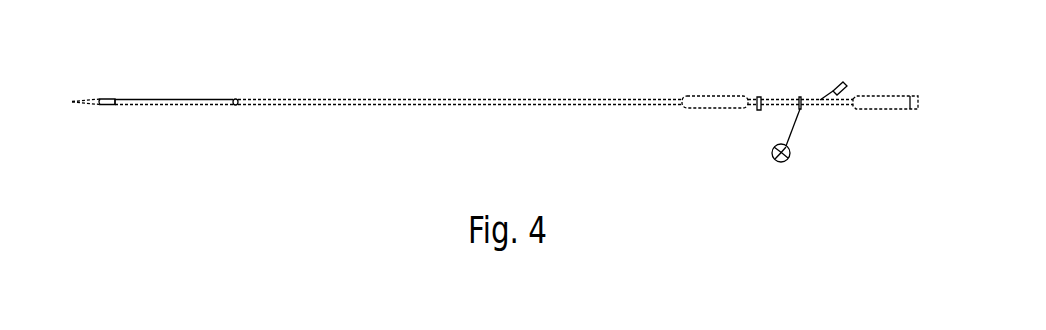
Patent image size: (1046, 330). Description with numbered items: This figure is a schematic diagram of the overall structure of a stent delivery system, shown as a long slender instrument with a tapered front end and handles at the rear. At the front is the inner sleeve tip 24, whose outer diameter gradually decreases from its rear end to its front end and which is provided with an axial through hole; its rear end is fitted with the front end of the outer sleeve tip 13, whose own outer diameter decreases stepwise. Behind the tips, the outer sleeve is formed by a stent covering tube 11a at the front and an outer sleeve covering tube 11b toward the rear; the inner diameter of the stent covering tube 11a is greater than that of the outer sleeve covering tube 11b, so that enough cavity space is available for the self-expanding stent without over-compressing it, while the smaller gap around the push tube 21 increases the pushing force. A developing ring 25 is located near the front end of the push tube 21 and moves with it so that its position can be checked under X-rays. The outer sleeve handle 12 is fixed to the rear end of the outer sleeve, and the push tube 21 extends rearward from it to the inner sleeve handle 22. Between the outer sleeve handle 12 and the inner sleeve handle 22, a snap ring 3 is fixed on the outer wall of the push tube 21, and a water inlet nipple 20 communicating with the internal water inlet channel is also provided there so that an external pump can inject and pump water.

The inner sleeve tip 24 is at (102, 98).
The outer sleeve tip 13 is at (115, 105).
The stent covering tube 11a is at (177, 98).
The developing ring 25 is at (236, 99).
The outer sleeve covering tube 11b is at (418, 98).
The outer sleeve handle 12 is at (712, 95).
The snap ring 3 is at (760, 97).
The push tube 21 is at (790, 100).
The water inlet nipple 20 is at (845, 83).
The inner sleeve handle 22 is at (880, 95).